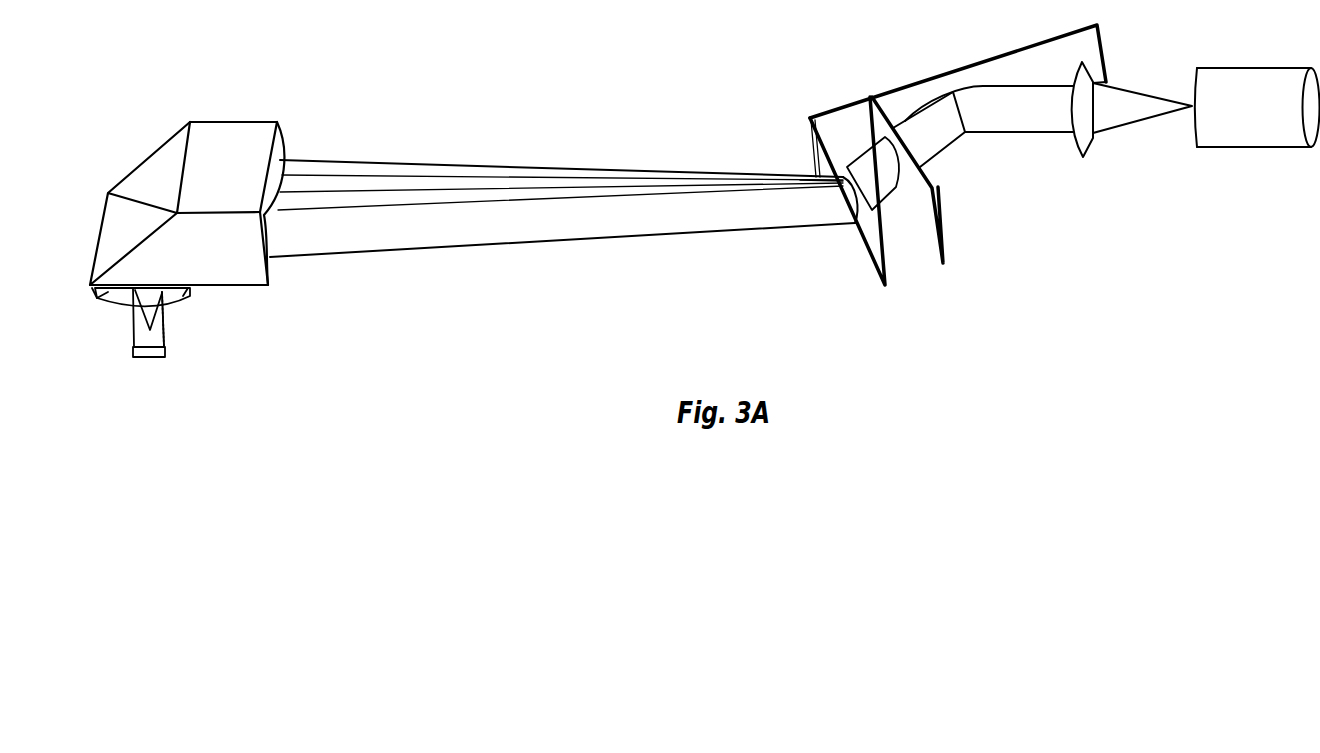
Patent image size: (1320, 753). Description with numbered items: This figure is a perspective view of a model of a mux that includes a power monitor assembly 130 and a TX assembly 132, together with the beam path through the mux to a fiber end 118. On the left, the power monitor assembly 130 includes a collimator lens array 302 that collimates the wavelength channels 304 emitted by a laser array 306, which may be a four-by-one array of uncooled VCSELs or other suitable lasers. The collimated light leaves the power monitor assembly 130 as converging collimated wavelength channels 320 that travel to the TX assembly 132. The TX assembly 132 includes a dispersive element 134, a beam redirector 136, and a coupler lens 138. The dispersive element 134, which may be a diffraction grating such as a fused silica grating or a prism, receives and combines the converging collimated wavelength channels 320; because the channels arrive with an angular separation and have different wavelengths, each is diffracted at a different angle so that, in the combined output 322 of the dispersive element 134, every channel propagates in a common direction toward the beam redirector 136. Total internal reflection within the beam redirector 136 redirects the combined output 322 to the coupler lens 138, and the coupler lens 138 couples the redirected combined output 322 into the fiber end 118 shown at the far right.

The fiber end 118 is at (1223, 142).
The power monitor assembly 130 is at (277, 270).
The TX assembly 132 is at (1108, 318).
The dispersive element 134 is at (870, 258).
The beam redirector 136 is at (975, 63).
The coupler lens 138 is at (1092, 143).
The collimator lens array 302 is at (185, 297).
The wavelength channels 304 is at (157, 318).
The laser array 306 is at (165, 345).
The converging collimated wavelength channels 320 is at (495, 243).
The combined output 322 is at (868, 153).